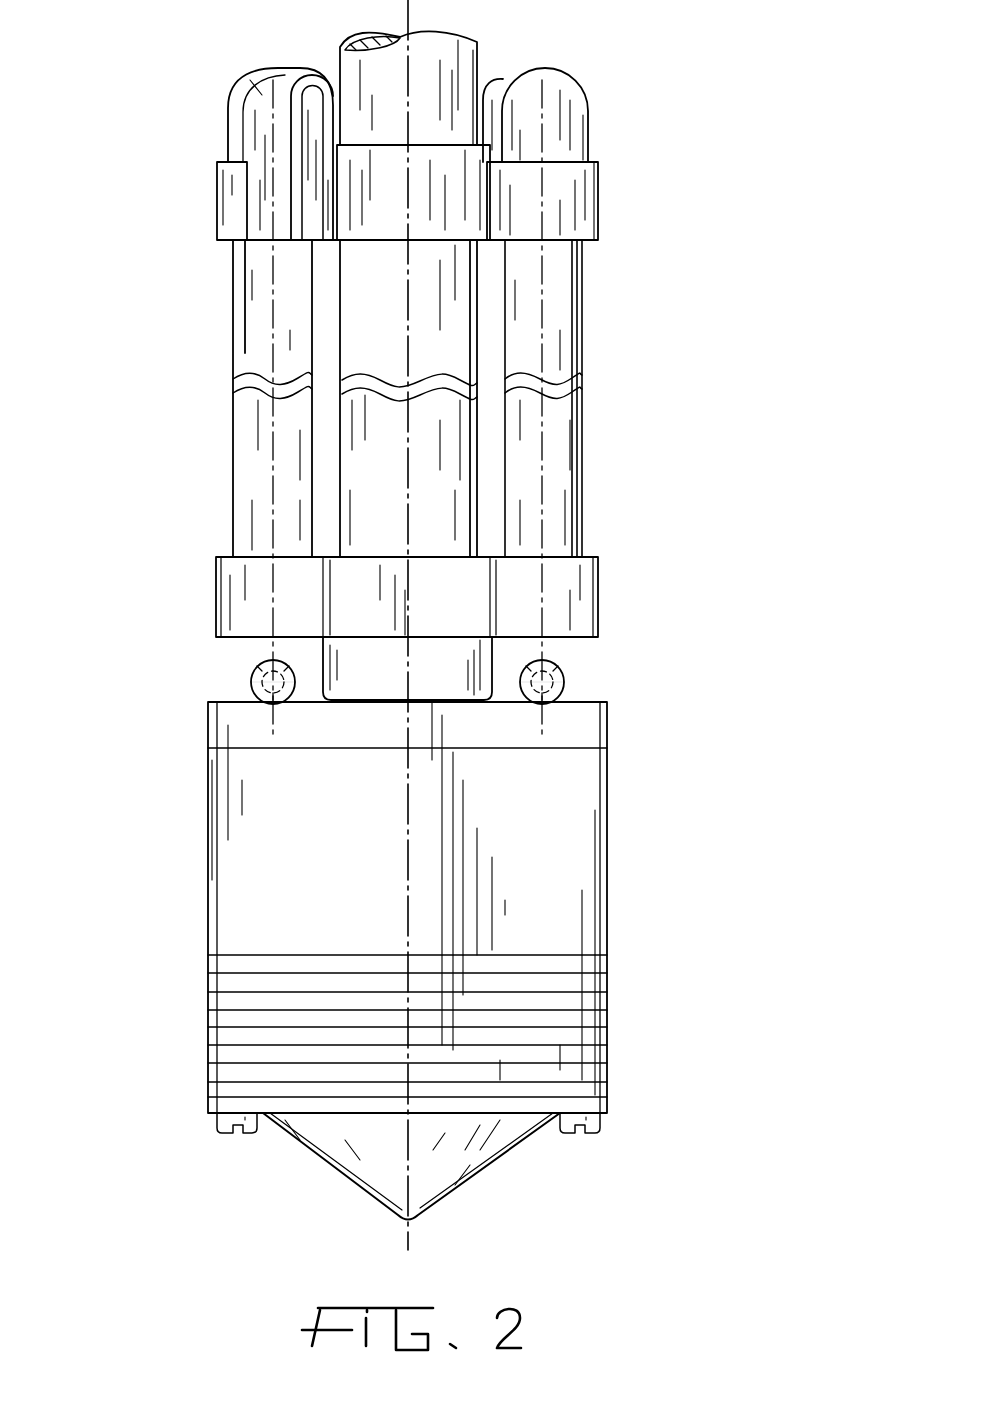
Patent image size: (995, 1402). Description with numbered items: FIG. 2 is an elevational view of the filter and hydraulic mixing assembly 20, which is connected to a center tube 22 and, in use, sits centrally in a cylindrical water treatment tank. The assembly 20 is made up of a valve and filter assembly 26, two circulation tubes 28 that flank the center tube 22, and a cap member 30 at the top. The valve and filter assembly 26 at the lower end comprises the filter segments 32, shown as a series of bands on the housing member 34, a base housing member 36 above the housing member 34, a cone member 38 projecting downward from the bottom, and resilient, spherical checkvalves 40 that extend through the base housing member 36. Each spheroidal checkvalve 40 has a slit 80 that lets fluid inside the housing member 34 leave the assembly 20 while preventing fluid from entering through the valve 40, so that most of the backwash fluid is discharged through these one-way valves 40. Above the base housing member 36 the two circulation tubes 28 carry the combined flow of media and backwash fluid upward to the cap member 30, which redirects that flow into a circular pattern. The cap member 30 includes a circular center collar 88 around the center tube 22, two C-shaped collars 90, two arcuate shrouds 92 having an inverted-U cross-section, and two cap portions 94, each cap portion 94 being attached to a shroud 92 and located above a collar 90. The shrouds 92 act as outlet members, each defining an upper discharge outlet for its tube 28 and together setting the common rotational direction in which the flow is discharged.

The filter and hydraulic mixing assembly 20 is at (142, 618).
The center tube 22 is at (457, 475).
The valve and filter assembly 26 is at (200, 835).
The circulation tubes 28 is at (245, 310).
The cap member 30 is at (232, 137).
The filter segments 32 is at (213, 965).
The housing member 34 is at (225, 890).
The base housing member 36 is at (343, 660).
The cone member 38 is at (337, 1153).
The spherical checkvalves 40 is at (248, 680).
The slit 80 is at (253, 680).
The circular center collar 88 is at (385, 215).
The C-shaped collars 90 is at (225, 202).
The arcuate shrouds 92 is at (257, 105).
The cap portions 94 is at (232, 118).